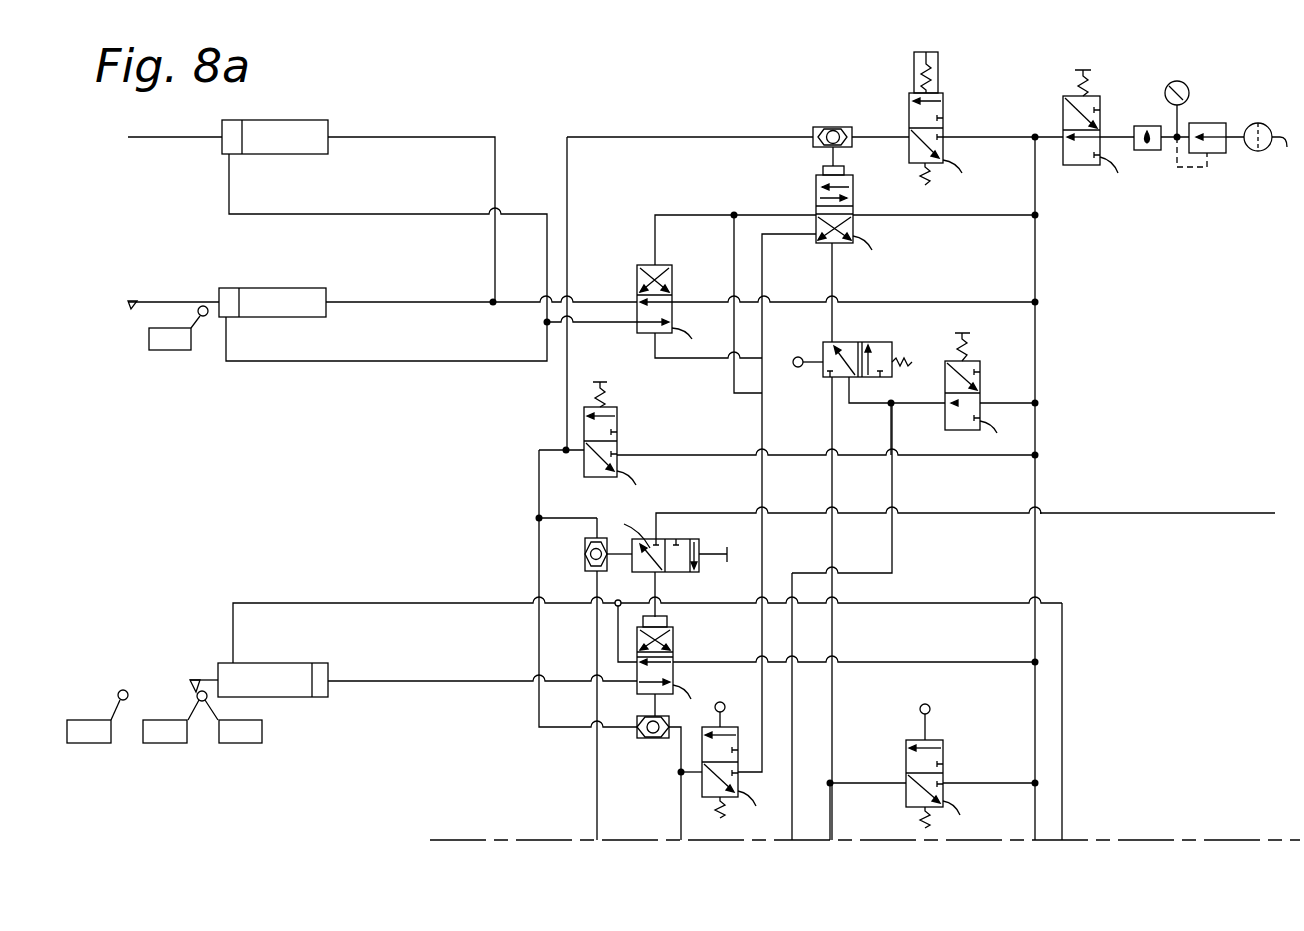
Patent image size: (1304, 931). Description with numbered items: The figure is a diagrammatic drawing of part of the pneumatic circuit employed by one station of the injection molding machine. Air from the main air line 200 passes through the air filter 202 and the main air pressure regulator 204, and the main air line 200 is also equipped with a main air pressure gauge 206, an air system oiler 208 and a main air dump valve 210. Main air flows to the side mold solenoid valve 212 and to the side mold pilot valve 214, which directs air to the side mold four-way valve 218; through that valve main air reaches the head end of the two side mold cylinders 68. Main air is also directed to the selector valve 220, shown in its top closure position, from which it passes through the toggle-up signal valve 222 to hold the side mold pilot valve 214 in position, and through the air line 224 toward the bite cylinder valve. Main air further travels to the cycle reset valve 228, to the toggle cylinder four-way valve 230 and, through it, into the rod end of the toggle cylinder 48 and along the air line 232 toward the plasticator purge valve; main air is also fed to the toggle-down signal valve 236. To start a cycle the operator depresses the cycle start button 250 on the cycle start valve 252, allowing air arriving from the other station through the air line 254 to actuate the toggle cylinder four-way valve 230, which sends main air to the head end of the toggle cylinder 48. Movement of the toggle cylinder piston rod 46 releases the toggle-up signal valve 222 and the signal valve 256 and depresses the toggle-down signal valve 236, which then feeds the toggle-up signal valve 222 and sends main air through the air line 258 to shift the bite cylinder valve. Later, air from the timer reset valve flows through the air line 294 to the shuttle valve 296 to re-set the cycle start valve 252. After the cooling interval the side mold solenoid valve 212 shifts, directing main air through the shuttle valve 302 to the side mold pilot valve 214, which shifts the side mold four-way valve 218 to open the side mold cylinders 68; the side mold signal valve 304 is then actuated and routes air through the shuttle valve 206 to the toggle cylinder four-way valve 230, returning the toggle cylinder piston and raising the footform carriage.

The side mold cylinders 68 is at (256, 120).
The shuttle valve 302 is at (831, 120).
The side mold solenoid valve 212 is at (942, 124).
The main air dump valve 210 is at (1063, 124).
The main air pressure gauge 206 is at (1188, 74).
The air system oiler 208 is at (1131, 112).
The main air pressure regulator 204 is at (1217, 119).
The air filter 202 is at (1271, 124).
The main air line 200 is at (1037, 355).
The side mold pilot valve 214 is at (816, 203).
The side mold four-way valve 218 is at (645, 265).
The toggle-up signal valve 222 is at (892, 343).
The selector valve 220 is at (980, 372).
The air line 224 is at (892, 410).
The cycle reset valve 228 is at (618, 425).
The air line 254 is at (1060, 513).
The cycle start button 250 is at (737, 543).
The shuttle valve 296 is at (585, 564).
The cycle start valve 252 is at (664, 574).
The toggle cylinder four-way valve 230 is at (673, 636).
The toggle cylinder piston rod 46 is at (214, 680).
The toggle cylinder 48 is at (318, 663).
The toggle-down signal valve 236 is at (944, 743).
The signal valve 256 is at (221, 743).
The air line 294 is at (594, 800).
The side mold signal valve 304 is at (730, 800).
The air line 258 is at (830, 800).
The air line 232 is at (1062, 822).